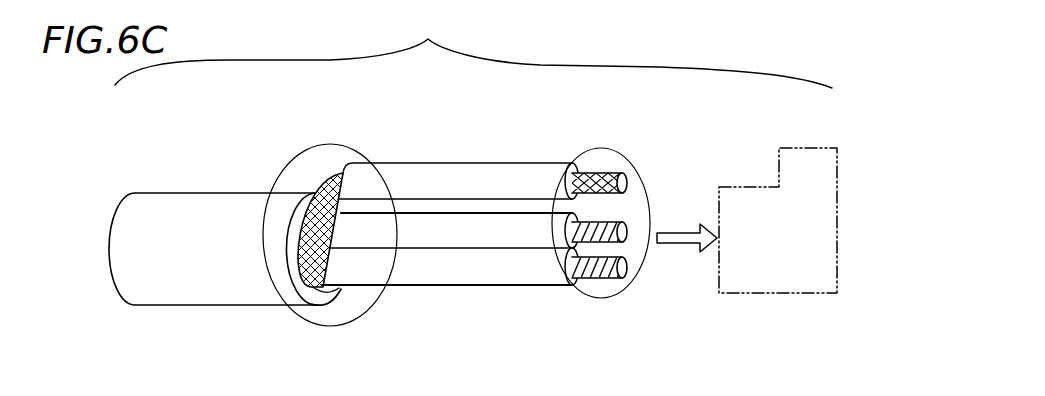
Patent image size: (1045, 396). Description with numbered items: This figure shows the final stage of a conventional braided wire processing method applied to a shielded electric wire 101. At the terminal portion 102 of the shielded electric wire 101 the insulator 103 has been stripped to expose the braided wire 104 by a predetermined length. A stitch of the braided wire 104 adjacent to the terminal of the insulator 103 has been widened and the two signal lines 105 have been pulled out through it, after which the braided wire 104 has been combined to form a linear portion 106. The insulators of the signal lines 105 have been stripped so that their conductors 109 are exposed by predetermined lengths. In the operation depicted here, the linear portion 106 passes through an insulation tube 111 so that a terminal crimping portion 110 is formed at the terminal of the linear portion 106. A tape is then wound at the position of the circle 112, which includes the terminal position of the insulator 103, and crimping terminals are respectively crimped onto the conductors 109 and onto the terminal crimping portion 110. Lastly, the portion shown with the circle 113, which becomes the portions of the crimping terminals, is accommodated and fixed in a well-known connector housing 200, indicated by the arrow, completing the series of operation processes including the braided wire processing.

The shielded electric wire 101 is at (213, 156).
The terminal portion 102 is at (458, 291).
The insulator 103 is at (192, 293).
The braided wire 104 is at (322, 202).
The signal lines 105 is at (507, 232).
The linear portion 106 is at (590, 173).
The conductors 109 is at (610, 222).
The terminal crimping portion 110 is at (608, 173).
The insulation tube 111 is at (452, 177).
The circle 112 is at (330, 326).
The circle 113 is at (595, 298).
The connector housing 200 is at (777, 268).